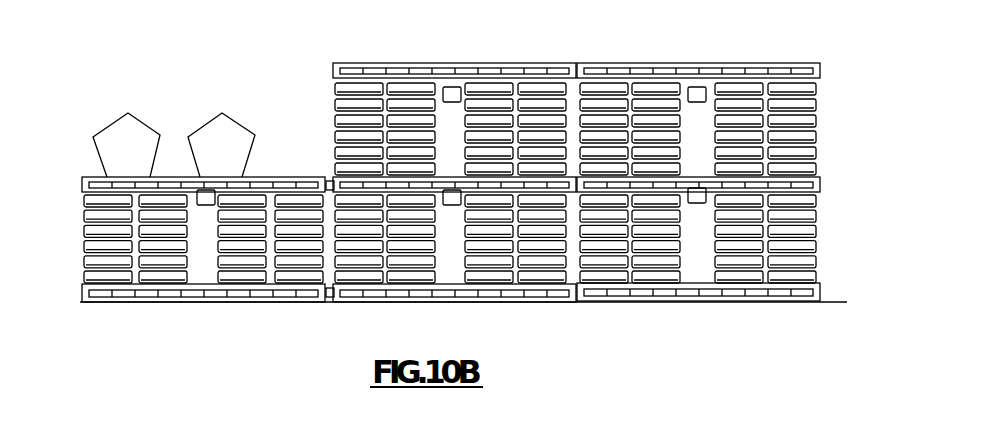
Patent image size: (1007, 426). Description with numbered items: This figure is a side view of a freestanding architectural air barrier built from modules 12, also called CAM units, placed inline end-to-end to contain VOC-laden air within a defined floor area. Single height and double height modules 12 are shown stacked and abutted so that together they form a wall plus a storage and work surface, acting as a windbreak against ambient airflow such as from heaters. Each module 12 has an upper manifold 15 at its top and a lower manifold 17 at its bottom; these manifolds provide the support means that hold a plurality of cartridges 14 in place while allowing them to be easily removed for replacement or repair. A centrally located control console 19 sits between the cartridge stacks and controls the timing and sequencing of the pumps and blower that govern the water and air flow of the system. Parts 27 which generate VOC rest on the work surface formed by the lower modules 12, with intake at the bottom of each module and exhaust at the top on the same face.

The module 12 is at (444, 179).
The cartridges 14 is at (342, 95).
The upper manifold 15 is at (485, 65).
The lower manifold 17 is at (367, 298).
The control console 19 is at (450, 87).
The parts 27 is at (118, 130).